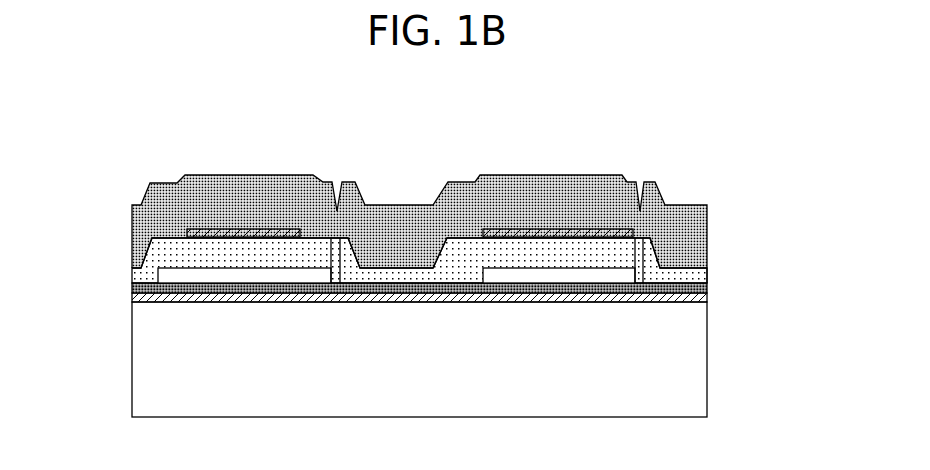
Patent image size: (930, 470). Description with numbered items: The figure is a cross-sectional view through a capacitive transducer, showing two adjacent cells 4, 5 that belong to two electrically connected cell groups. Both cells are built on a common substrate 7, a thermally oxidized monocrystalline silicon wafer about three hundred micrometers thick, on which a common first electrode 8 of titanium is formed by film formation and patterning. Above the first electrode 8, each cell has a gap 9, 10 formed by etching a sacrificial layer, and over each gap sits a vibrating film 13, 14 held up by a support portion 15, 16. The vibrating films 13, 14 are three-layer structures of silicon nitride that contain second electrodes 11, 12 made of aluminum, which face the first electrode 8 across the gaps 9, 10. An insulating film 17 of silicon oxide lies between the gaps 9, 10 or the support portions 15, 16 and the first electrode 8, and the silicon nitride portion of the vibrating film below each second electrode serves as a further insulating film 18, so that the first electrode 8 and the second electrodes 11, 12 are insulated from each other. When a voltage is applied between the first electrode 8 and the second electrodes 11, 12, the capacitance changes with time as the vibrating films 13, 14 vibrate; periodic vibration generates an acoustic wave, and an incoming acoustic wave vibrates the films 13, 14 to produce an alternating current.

The cell 4 is at (408, 140).
The cell 5 is at (715, 140).
The substrate 7 is at (708, 376).
The first electrode 8 is at (355, 298).
The gap 9 is at (255, 275).
The gap 10 is at (535, 275).
The second electrode 11 is at (277, 228).
The second electrode 12 is at (498, 230).
The vibrating film 13 is at (128, 175).
The vibrating film 14 is at (708, 175).
The support portion 15 is at (345, 260).
The support portion 16 is at (470, 262).
The insulating film 17 is at (708, 287).
The insulating film 18 is at (707, 275).